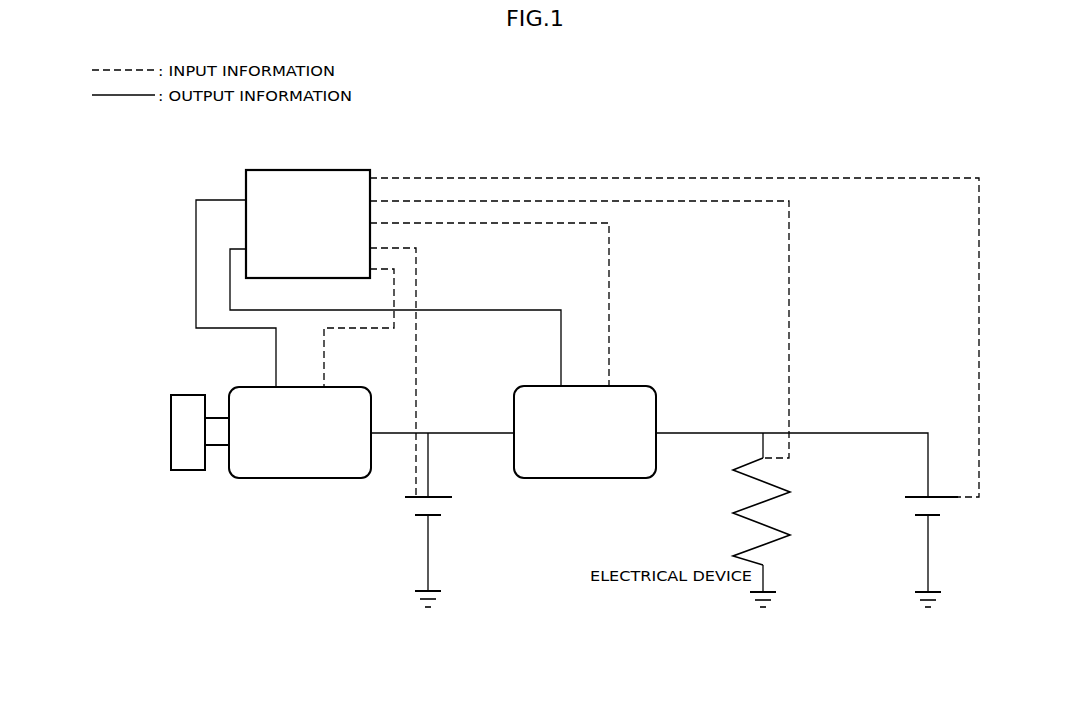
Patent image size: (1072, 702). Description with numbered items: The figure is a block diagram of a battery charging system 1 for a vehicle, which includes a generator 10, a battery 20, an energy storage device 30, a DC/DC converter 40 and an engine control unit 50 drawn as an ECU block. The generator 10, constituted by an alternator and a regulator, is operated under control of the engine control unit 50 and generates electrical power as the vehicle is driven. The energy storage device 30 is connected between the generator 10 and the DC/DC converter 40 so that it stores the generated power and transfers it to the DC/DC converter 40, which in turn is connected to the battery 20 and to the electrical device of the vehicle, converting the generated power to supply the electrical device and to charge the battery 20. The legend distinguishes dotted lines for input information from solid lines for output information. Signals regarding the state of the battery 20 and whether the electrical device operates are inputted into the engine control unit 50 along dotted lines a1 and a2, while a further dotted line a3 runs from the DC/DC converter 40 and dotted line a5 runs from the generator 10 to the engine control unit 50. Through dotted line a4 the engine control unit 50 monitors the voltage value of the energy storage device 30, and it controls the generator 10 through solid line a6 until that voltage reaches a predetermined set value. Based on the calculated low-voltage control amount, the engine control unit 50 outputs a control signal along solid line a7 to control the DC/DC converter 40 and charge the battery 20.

The battery charging system 1 is at (665, 138).
The generator 10 is at (300, 478).
The battery 20 is at (917, 497).
The energy storage device 30 is at (440, 497).
The DC/DC converter 40 is at (585, 478).
The engine control unit 50 is at (308, 170).
The dotted line a1 is at (674, 330).
The dotted line a2 is at (579, 322).
The dotted line a3 is at (489, 297).
The dotted line a4 is at (404, 370).
The dotted line a5 is at (359, 328).
The solid line a6 is at (236, 284).
The solid line a7 is at (395, 317).